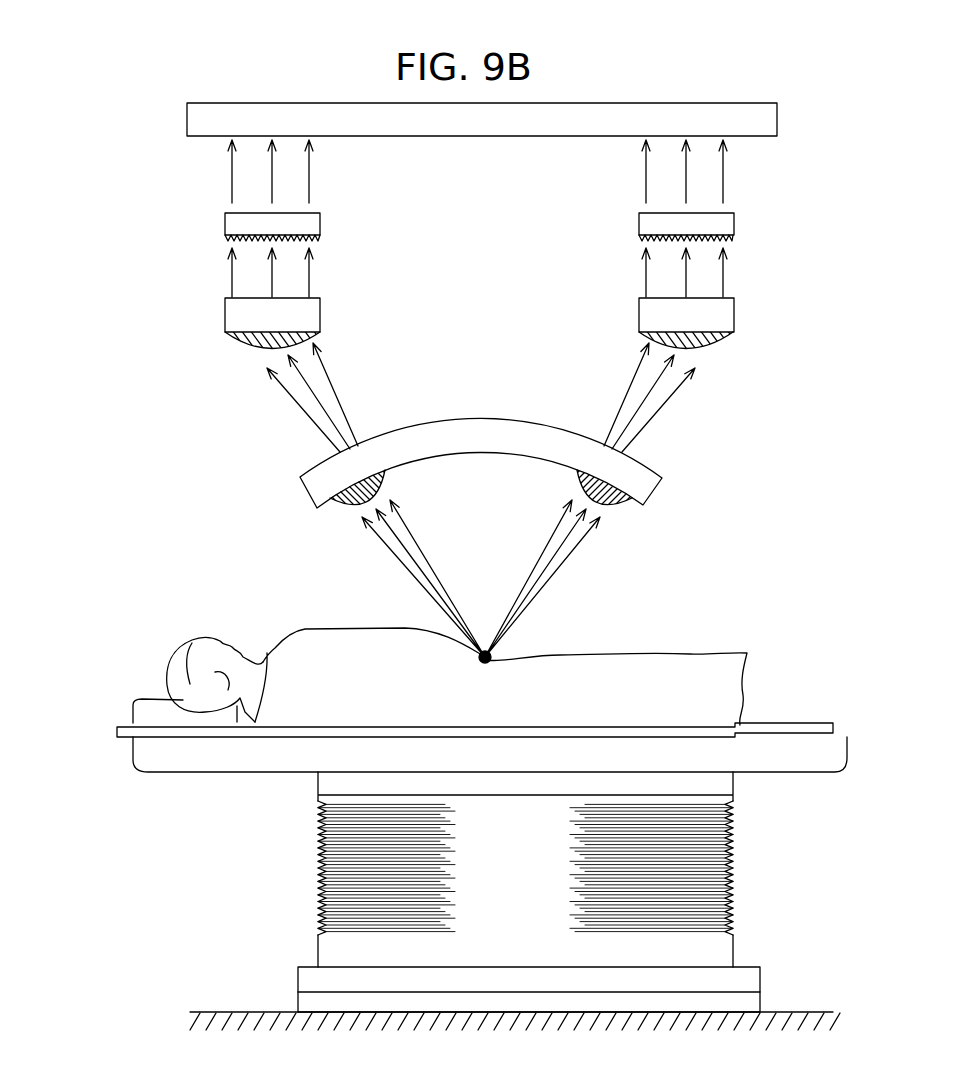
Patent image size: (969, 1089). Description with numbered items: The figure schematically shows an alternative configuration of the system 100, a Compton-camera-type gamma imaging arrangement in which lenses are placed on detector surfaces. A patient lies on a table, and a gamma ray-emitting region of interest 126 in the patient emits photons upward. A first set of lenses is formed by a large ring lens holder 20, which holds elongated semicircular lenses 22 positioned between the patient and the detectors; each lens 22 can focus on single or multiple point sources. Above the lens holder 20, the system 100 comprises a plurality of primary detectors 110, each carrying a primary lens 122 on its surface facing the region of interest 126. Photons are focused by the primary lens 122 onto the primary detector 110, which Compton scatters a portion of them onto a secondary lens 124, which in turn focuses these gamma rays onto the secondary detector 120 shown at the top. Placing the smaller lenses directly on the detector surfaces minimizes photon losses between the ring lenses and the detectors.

The system 100 is at (129, 102).
The secondary detector 120 is at (703, 115).
The secondary lens 124 is at (225, 228).
The primary detector 110 is at (482, 338).
The primary lens 122 is at (248, 342).
The lens holder 20 is at (468, 492).
The lens 22 is at (345, 505).
The gamma ray-emitting region of interest 126 is at (490, 665).